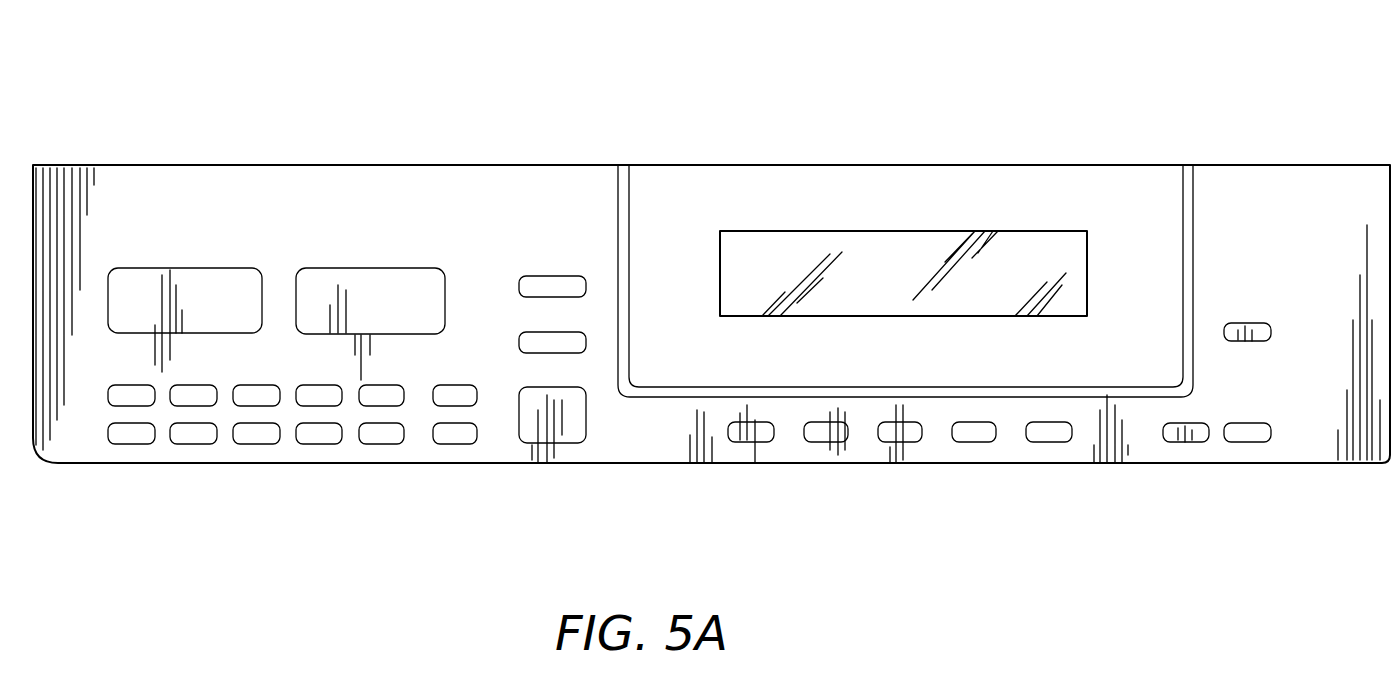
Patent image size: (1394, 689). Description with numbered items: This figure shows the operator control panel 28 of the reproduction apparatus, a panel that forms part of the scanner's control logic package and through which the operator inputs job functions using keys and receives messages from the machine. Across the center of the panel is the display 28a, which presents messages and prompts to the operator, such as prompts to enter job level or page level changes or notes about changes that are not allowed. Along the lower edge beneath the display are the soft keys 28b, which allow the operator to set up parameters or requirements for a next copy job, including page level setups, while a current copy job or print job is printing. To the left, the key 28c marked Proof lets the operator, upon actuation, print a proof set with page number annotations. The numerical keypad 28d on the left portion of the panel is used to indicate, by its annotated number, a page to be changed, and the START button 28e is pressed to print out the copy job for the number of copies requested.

The operator control panel 28 is at (748, 112).
The display 28a is at (1008, 231).
The soft keys 28b is at (812, 442).
The hard or soft key 28c is at (521, 280).
The numerical keypad 28d is at (92, 430).
The START button 28e is at (586, 435).